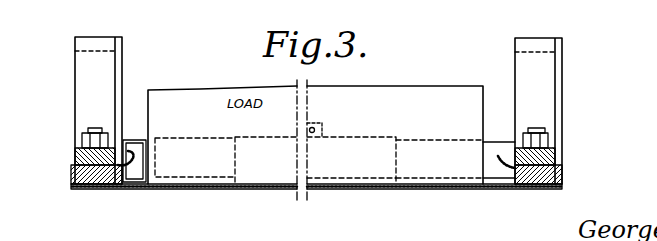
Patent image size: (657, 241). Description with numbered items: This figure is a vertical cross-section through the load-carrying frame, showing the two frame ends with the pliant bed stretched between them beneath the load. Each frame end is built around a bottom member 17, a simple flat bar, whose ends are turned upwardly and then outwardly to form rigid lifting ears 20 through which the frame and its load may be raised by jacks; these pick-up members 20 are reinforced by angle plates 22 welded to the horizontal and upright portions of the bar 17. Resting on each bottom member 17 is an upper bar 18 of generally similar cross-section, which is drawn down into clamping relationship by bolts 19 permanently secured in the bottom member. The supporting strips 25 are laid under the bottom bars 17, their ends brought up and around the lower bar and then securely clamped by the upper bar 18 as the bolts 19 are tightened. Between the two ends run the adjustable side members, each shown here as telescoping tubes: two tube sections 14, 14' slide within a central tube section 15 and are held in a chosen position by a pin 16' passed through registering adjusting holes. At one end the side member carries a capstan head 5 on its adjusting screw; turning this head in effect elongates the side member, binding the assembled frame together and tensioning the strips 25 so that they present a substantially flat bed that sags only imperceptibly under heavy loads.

The lifting ear 20 is at (530, 38).
The angle plate 22 is at (122, 80).
The bolt 19 is at (100, 128).
The upper bar 18 is at (75, 154).
The bottom member 17 is at (113, 187).
The strip 25 is at (390, 189).
The capstan head 5 is at (125, 139).
The tube section 14 is at (455, 141).
The tube section 14' is at (226, 147).
The central tube section 15 is at (372, 137).
The pin 16' is at (334, 116).